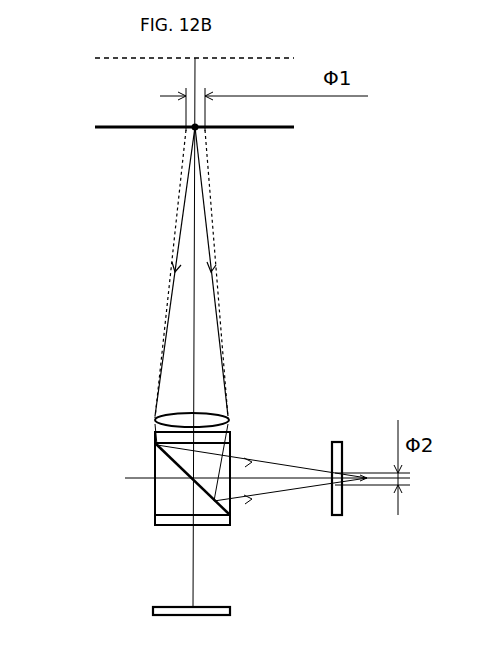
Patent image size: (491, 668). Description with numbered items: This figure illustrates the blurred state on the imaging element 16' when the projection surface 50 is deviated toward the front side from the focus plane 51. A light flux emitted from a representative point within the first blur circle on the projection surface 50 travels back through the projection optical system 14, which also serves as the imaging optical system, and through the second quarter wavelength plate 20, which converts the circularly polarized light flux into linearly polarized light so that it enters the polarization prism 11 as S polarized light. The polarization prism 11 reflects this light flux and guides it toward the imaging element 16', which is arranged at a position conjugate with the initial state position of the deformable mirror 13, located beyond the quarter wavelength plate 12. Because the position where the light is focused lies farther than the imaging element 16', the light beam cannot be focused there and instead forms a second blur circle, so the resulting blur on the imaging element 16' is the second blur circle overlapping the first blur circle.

The focus plane 51 is at (95, 58).
The projection surface 50 is at (95, 127).
The projection optical system 14 is at (230, 415).
The second ¼ wavelength plate 20 is at (230, 433).
The polarization prism 11 is at (230, 507).
The ¼ wavelength plate 12 is at (230, 525).
The deformable mirror 13 is at (193, 615).
The imaging element 16' is at (350, 445).